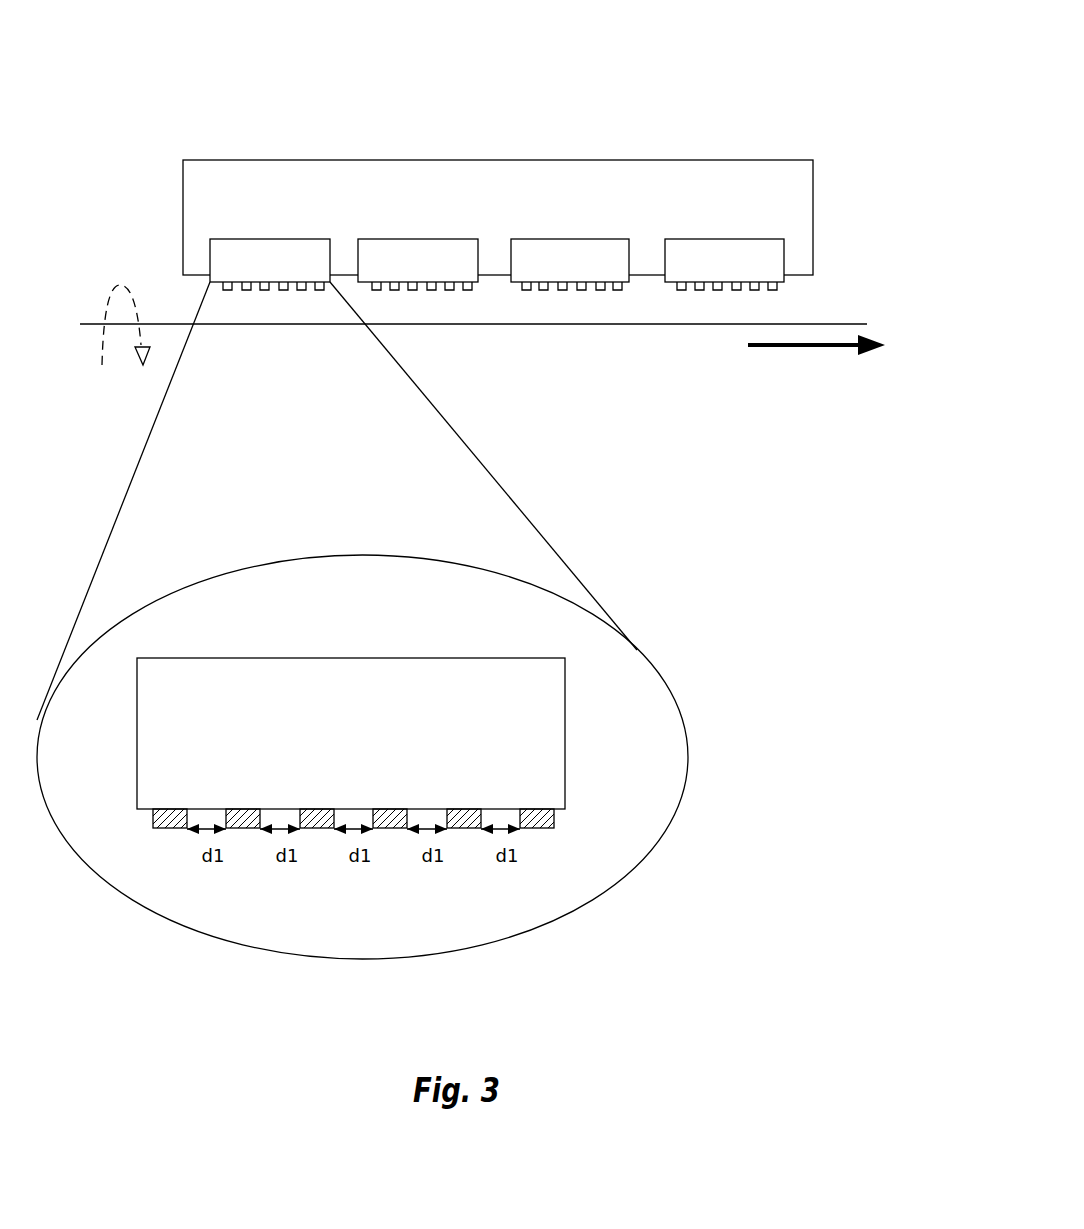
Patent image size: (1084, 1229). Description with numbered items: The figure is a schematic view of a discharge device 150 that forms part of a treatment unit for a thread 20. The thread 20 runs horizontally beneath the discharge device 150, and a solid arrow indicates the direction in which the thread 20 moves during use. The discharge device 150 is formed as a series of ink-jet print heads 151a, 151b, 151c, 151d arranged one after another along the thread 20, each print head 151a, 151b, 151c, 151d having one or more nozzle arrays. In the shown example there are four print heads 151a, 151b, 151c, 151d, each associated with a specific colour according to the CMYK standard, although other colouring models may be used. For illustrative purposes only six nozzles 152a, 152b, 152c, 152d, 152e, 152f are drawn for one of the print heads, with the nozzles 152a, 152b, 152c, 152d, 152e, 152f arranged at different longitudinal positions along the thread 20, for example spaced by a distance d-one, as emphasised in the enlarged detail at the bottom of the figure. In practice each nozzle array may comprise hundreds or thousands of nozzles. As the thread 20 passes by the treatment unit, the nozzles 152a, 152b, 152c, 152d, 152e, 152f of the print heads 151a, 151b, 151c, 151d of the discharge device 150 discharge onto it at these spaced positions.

The discharge device 150 is at (686, 131).
The ink-jet print head 151a is at (278, 239).
The ink-jet print head 151b is at (428, 239).
The ink-jet print head 151c is at (555, 239).
The ink-jet print head 151d is at (700, 239).
The nozzle 152a is at (227, 290).
The nozzle 152b is at (246, 290).
The nozzle 152c is at (264, 290).
The nozzle 152d is at (283, 290).
The nozzle 152e is at (301, 290).
The nozzle 152f is at (319, 290).
The thread 20 is at (612, 324).